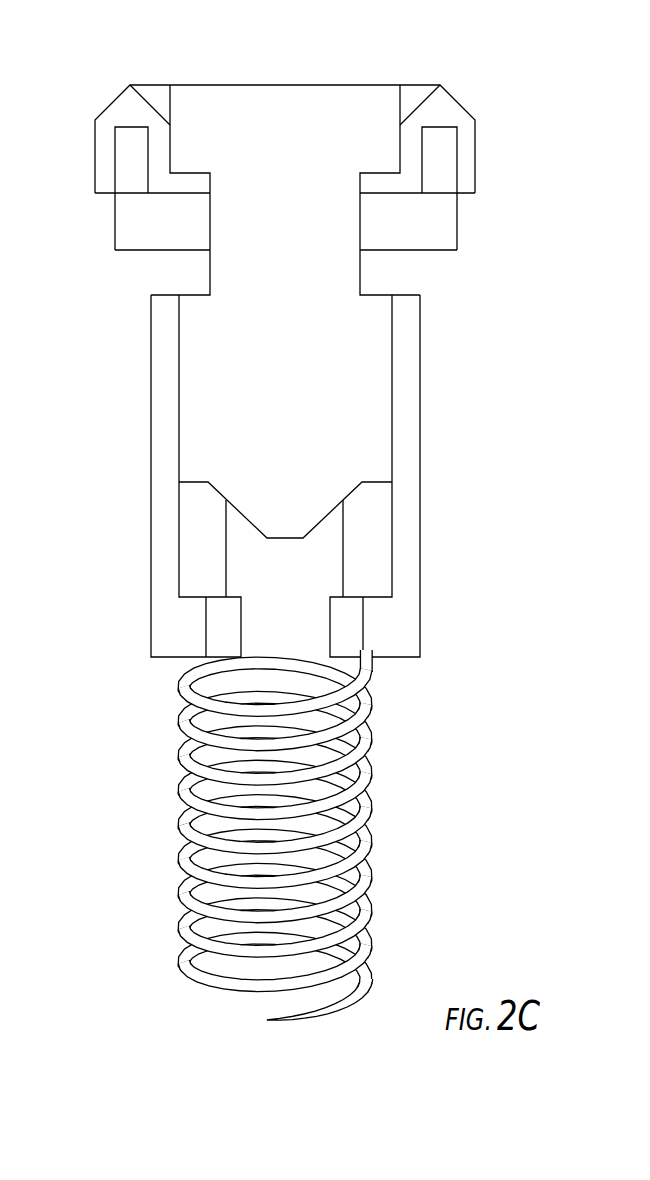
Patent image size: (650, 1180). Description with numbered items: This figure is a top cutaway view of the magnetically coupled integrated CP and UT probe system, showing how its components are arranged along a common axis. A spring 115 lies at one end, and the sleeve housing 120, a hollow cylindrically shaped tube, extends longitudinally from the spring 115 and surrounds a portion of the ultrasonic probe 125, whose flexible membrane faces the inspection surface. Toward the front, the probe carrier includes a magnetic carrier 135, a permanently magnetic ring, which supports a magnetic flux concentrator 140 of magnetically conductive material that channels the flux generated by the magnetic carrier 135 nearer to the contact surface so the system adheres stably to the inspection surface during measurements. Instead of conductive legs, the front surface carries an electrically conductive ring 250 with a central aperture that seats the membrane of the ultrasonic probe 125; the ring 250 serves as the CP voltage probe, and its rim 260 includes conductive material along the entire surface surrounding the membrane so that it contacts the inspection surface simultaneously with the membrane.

The spring 115 is at (370, 812).
The sleeve housing 120 is at (160, 560).
The ultrasonic probe 125 is at (335, 390).
The magnetic carrier 135 is at (447, 222).
The magnetic flux concentrator 140 is at (445, 160).
The electrically conductive ring 250 is at (93, 163).
The rim 260 is at (131, 84).